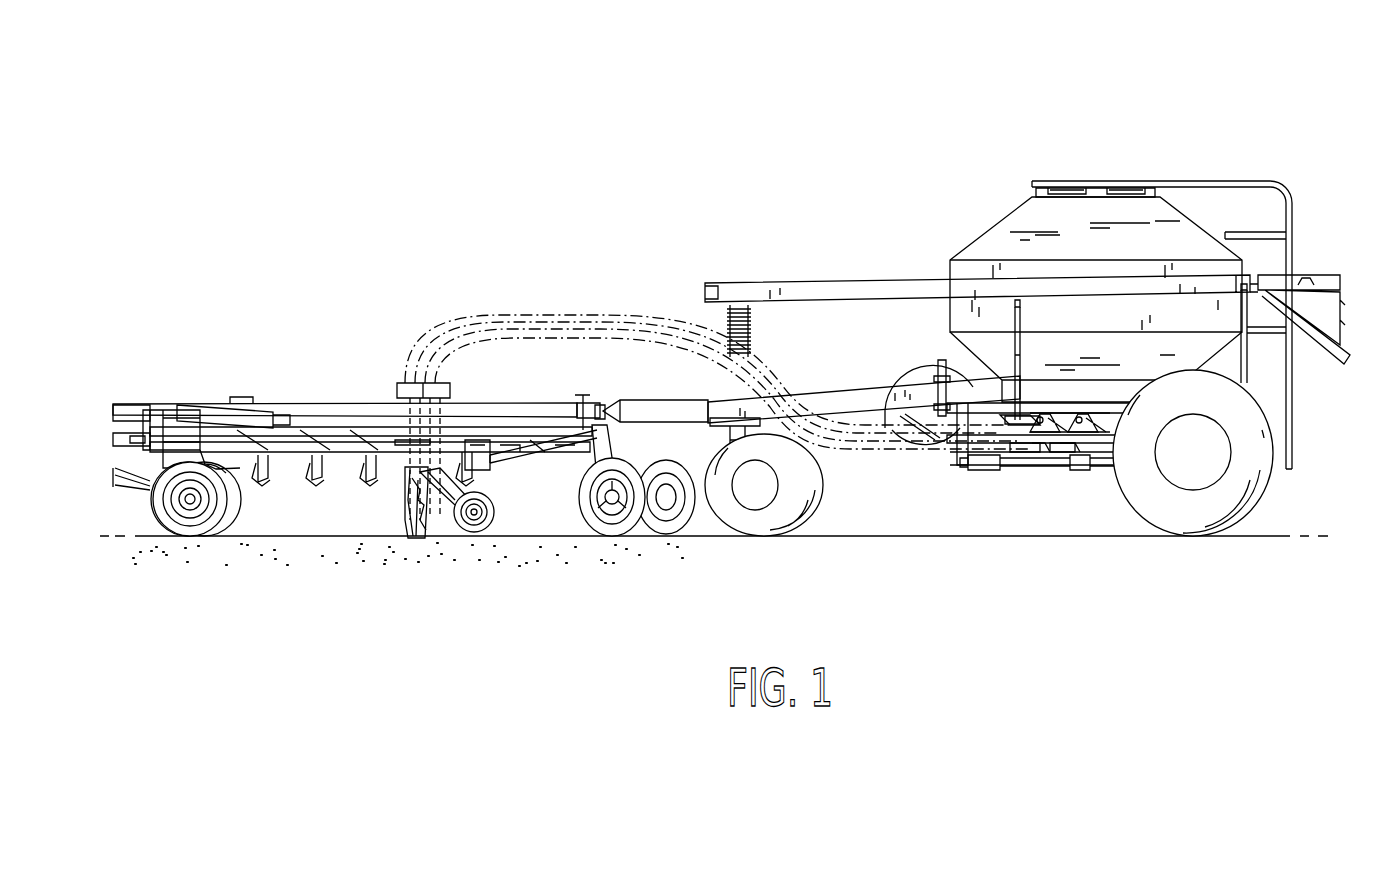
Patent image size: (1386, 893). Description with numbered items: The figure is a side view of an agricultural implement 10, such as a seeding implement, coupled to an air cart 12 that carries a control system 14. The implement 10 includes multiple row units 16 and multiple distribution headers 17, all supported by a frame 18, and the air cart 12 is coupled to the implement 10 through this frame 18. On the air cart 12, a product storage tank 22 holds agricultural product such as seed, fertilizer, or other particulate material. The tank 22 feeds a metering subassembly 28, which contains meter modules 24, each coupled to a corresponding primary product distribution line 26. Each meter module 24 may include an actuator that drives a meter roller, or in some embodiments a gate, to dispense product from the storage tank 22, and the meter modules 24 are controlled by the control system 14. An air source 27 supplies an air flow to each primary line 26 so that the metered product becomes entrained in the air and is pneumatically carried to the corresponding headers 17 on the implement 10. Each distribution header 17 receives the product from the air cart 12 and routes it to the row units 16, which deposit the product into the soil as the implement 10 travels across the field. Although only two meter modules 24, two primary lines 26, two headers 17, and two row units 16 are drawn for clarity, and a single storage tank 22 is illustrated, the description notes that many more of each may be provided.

The agricultural implement 10 is at (355, 327).
The air cart 12 is at (1000, 157).
The control system 14 is at (1012, 478).
The row unit 16 is at (394, 521).
The distribution header 17 is at (412, 381).
The frame 18 is at (215, 398).
The product storage tank 22 is at (1018, 218).
The meter module 24 is at (1100, 430).
The primary product distribution line 26 is at (614, 333).
The air source 27 is at (895, 367).
The metering subassembly 28 is at (1005, 424).